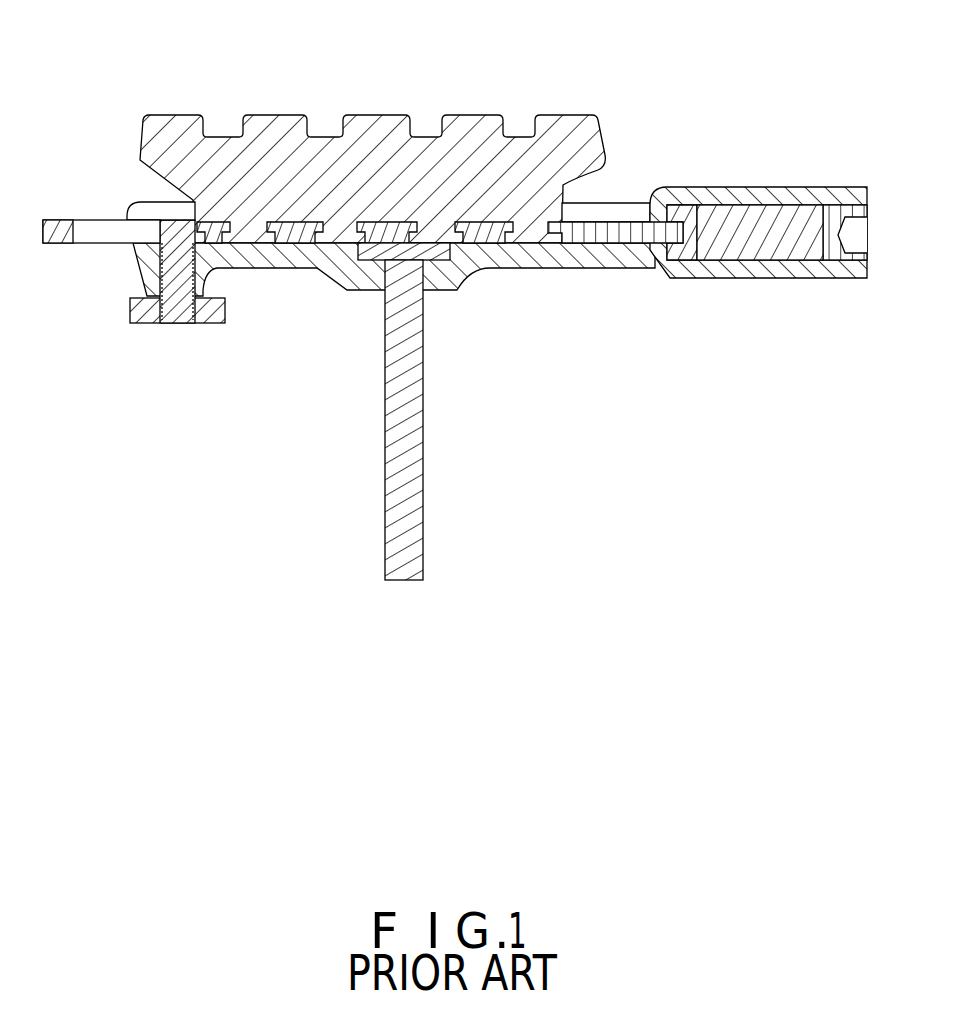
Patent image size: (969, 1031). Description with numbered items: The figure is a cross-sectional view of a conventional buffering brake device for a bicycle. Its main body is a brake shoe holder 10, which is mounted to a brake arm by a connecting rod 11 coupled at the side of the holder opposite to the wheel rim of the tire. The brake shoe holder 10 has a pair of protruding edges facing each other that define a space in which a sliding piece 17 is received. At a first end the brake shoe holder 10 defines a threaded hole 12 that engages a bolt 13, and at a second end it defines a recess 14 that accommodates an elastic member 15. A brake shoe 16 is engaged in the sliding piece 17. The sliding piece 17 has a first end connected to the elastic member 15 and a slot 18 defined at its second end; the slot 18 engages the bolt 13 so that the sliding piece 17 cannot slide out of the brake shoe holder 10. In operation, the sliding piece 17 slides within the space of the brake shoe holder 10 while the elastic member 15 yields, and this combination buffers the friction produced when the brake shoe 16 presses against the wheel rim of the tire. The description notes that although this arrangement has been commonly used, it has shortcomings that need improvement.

The brake shoe holder 10 is at (530, 262).
The connecting rod 11 is at (392, 447).
The threaded hole 12 is at (160, 270).
The bolt 13 is at (177, 310).
The recess 14 is at (763, 277).
The elastic member 15 is at (748, 222).
The brake shoe 16 is at (463, 160).
The sliding piece 17 is at (612, 238).
The slot 18 is at (103, 227).